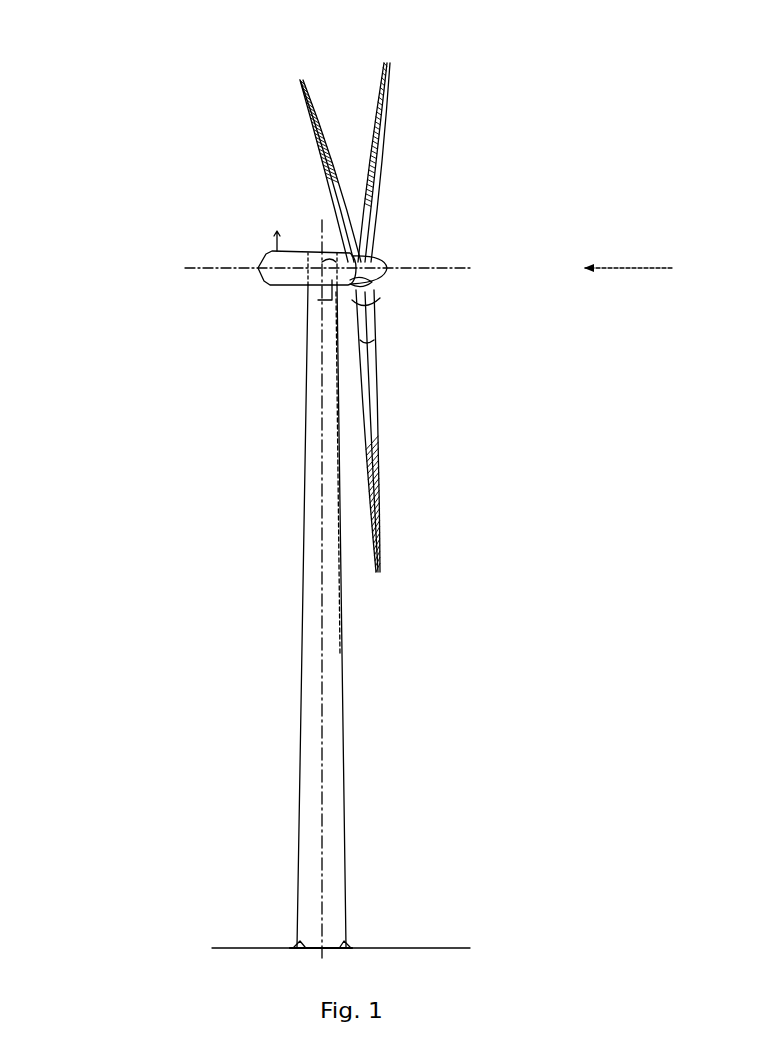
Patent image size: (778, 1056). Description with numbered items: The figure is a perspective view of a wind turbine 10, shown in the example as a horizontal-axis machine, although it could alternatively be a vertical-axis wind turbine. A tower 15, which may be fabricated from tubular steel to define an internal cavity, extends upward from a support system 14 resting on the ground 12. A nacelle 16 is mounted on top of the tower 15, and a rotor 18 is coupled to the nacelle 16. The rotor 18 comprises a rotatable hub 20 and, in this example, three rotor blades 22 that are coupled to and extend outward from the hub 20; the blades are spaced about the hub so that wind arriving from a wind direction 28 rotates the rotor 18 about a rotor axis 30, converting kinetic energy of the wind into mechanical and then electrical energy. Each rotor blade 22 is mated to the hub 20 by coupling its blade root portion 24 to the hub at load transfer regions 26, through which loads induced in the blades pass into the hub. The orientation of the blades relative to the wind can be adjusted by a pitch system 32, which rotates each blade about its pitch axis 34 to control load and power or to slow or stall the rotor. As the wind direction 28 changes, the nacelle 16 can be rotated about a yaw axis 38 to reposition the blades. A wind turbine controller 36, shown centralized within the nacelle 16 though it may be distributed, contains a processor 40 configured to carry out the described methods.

The wind turbine 10 is at (114, 84).
The ground 12 is at (232, 947).
The support system 14 is at (291, 947).
The tower 15 is at (302, 590).
The nacelle 16 is at (283, 287).
The rotor 18 is at (371, 310).
The rotatable hub 20 is at (378, 262).
The rotor blade 22 is at (318, 135).
The blade root portion 24 is at (372, 360).
The load transfer region 26 is at (368, 290).
The wind direction 28 is at (640, 268).
The rotor axis 30 is at (440, 268).
The pitch system 32 is at (365, 312).
The pitch axis 34 is at (298, 78).
The wind turbine controller 36 is at (318, 304).
The yaw axis 38 is at (338, 648).
The processor 40 is at (332, 243).